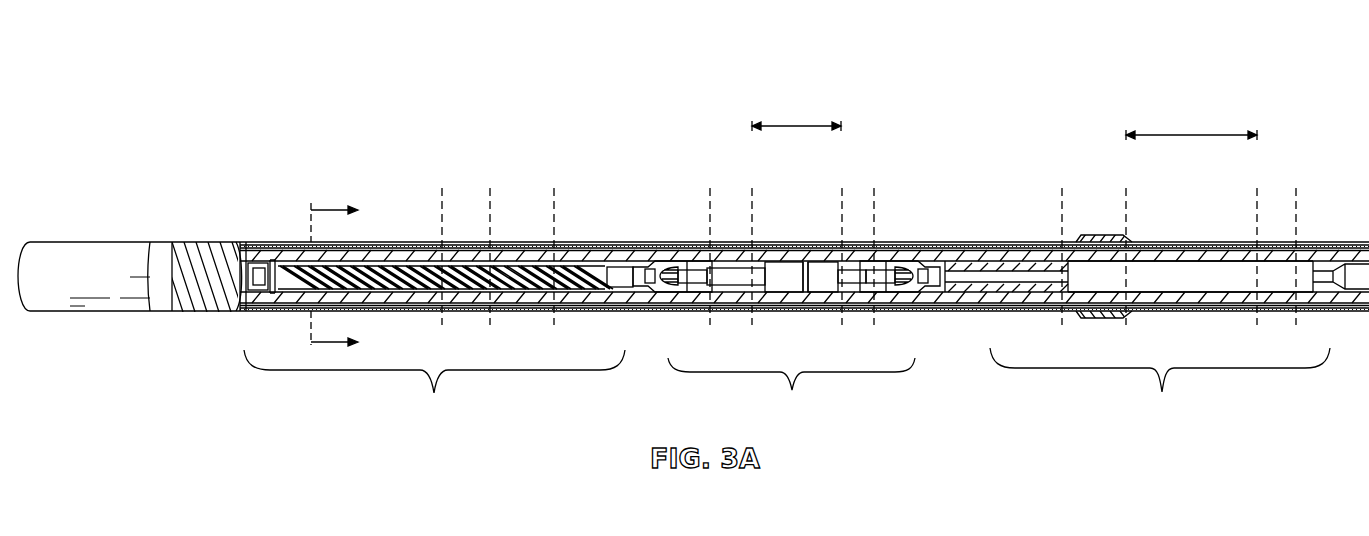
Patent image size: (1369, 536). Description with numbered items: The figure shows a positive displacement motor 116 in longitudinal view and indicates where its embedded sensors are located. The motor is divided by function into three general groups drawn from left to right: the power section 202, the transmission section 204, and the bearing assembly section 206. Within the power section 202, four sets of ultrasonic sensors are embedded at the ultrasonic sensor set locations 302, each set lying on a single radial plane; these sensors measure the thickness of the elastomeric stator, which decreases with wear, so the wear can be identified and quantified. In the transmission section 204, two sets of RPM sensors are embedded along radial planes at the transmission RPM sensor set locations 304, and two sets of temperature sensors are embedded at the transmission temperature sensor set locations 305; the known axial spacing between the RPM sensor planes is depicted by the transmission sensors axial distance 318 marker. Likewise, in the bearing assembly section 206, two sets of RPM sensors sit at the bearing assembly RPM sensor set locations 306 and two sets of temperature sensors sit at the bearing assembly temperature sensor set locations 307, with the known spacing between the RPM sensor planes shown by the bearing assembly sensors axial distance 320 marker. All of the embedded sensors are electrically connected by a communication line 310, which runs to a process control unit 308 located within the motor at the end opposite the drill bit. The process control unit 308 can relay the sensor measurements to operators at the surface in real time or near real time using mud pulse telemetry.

The positive displacement motor 116 is at (143, 81).
The power section 202 is at (434, 389).
The transmission section 204 is at (791, 390).
The bearing assembly section 206 is at (1160, 386).
The ultrasonic sensor set locations 302 is at (305, 236).
The transmission RPM sensor set locations 304 is at (752, 190).
The transmission temperature sensor set locations 305 is at (710, 224).
The bearing assembly RPM sensor set locations 306 is at (1126, 190).
The bearing assembly temperature sensor set locations 307 is at (1062, 224).
The process control unit 308 is at (113, 290).
The communication line 310 is at (250, 240).
The transmission sensors axial distance 318 is at (797, 126).
The bearing assembly sensors axial distance 320 is at (1192, 135).